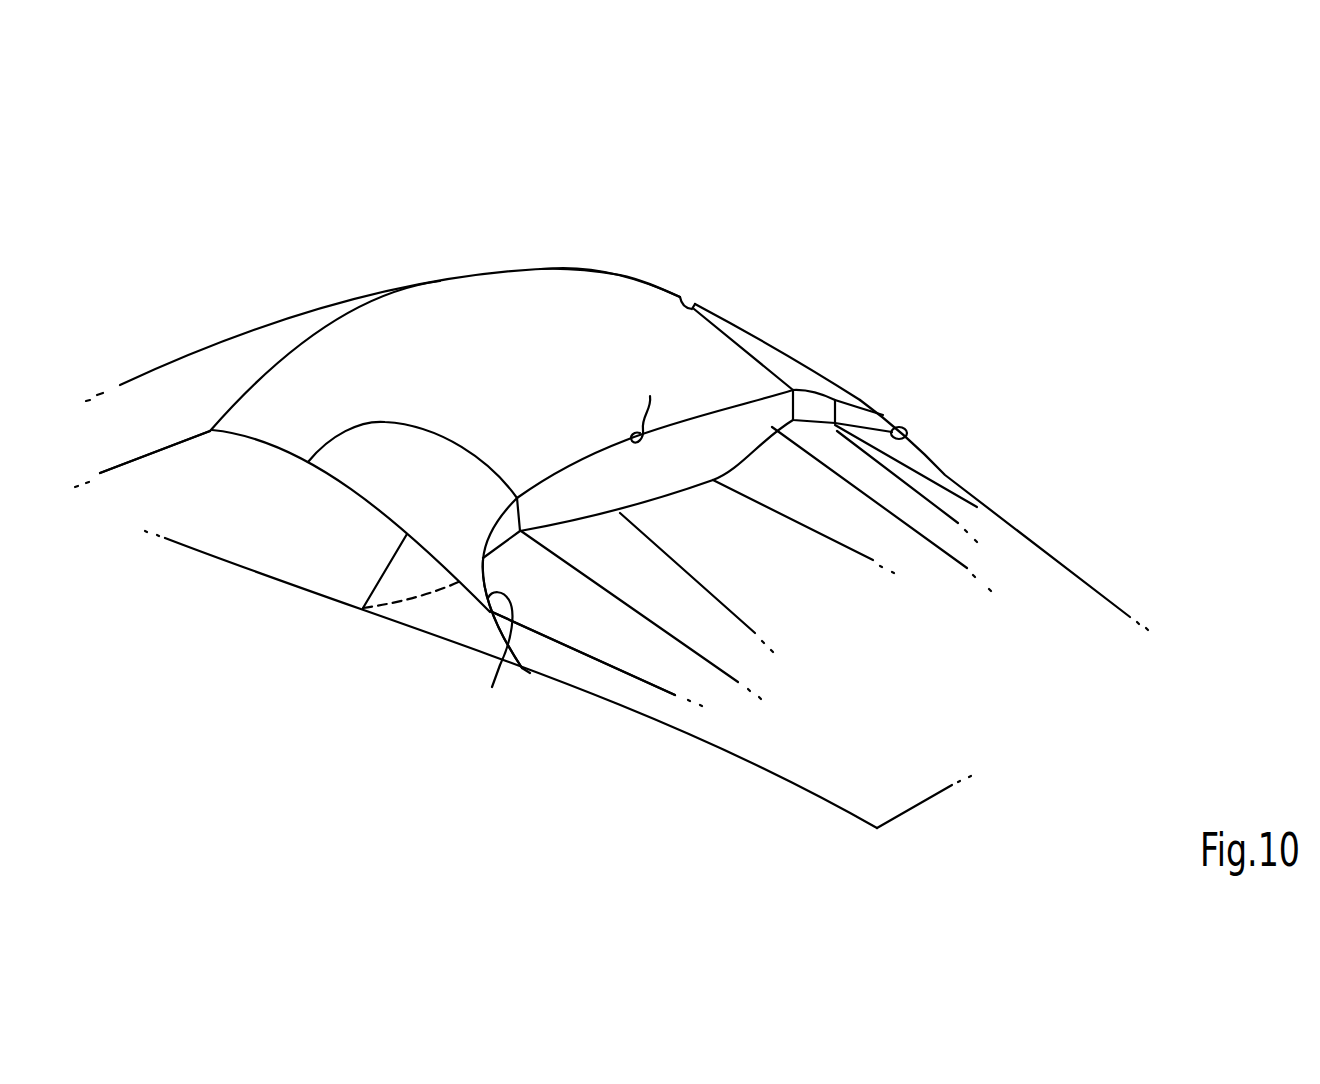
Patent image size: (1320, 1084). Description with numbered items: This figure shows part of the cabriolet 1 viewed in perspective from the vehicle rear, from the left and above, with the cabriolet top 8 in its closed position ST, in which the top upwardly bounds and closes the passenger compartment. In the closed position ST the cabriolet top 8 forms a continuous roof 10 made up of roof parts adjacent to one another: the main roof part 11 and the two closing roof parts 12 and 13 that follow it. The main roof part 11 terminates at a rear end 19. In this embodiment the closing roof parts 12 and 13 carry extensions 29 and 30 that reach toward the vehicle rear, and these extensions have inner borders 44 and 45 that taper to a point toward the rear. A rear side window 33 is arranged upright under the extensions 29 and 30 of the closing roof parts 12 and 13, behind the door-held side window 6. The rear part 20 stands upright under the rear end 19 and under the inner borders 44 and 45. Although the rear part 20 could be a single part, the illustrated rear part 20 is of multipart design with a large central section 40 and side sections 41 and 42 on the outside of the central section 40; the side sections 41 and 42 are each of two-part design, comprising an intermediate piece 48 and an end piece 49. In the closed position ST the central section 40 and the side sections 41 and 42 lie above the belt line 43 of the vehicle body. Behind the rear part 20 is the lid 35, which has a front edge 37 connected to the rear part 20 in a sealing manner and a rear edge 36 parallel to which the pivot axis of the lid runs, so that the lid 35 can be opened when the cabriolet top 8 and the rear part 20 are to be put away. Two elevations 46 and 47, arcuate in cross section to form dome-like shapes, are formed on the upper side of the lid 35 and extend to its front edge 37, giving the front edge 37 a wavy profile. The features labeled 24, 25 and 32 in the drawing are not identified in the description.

The cabriolet 1 is at (770, 255).
The side window 6 is at (287, 558).
The cabriolet top 8 is at (651, 281).
The roof 10 is at (604, 264).
The main roof part 11 is at (540, 287).
The closing roof part 12 is at (796, 366).
The closing roof part 13 is at (467, 467).
The rear end 19 is at (655, 426).
The rear part 20 is at (684, 510).
The arched edge 24 is at (420, 426).
The step 25 is at (684, 299).
The extension 29 is at (880, 417).
The extension 30 is at (465, 553).
The edge 32 is at (501, 488).
The rear side window 33 is at (408, 617).
The lid 35 is at (1022, 556).
The rear edge 36 is at (927, 803).
The front edge 37 is at (653, 508).
The central section 40 is at (693, 457).
The side section 41 is at (500, 570).
The side section 42 is at (939, 489).
The belt line 43 is at (332, 603).
The inner border 44 is at (492, 687).
The inner border 45 is at (910, 438).
The elevation 46 is at (787, 490).
The elevation 47 is at (608, 645).
The intermediate piece 48 is at (505, 527).
The end piece 49 is at (858, 423).
The closed position ST is at (784, 311).